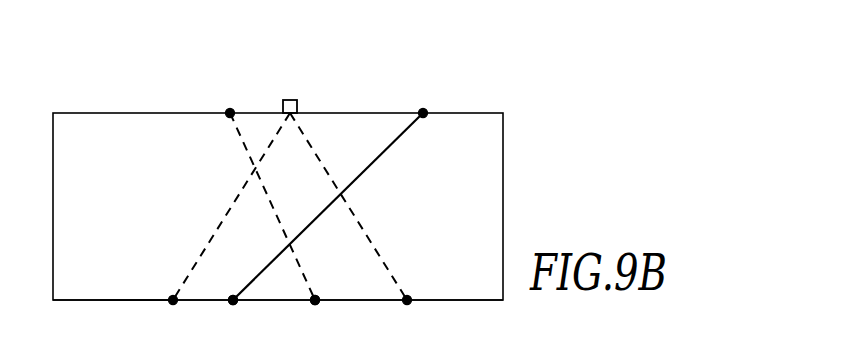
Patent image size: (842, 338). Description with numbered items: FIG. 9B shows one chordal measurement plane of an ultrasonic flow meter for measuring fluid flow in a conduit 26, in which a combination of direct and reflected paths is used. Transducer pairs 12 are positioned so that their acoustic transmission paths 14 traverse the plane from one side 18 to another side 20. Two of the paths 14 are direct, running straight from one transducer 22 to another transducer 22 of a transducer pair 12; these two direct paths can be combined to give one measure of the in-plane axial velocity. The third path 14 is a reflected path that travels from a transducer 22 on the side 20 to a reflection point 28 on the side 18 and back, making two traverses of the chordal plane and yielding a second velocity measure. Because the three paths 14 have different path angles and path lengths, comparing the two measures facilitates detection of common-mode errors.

The transducer pair 12 is at (313, 298).
The acoustic transmission path 14 is at (230, 208).
The one side of the plane 18 is at (135, 113).
The another side of the plane 20 is at (82, 298).
The transducer 22 is at (230, 113).
The conduit 26 is at (137, 298).
The reflection point 28 is at (297, 102).